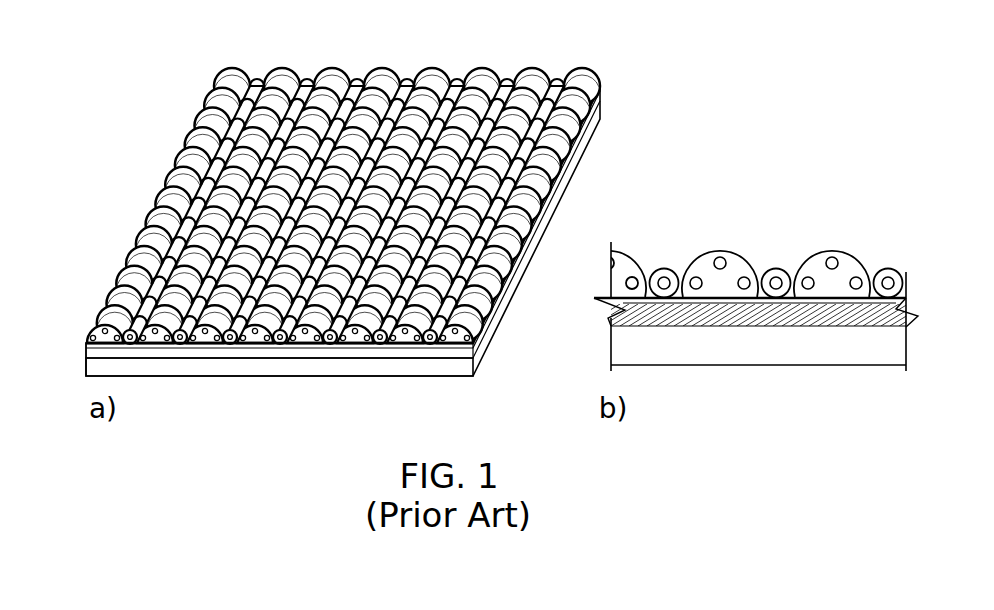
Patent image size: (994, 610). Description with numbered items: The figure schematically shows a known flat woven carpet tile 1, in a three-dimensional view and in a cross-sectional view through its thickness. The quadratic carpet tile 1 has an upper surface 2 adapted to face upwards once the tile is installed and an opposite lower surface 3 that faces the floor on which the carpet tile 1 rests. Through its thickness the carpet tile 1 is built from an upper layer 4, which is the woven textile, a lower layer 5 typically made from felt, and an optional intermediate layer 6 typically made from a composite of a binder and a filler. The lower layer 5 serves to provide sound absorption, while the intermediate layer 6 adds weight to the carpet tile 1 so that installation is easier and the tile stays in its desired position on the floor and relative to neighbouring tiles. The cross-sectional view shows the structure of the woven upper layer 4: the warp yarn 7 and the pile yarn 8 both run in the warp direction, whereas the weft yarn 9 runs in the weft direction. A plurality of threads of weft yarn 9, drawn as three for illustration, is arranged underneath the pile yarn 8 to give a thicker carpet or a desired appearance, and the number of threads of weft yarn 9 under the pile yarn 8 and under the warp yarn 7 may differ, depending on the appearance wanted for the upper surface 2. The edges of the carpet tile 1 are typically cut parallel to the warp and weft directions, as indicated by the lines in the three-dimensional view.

The carpet tile 1 is at (312, 240).
The upper surface 2 is at (367, 103).
The lower surface 3 is at (272, 377).
The upper layer 4 is at (87, 340).
The lower layer 5 is at (93, 368).
The intermediate layer 6 is at (87, 348).
The warp yarn 7 is at (776, 276).
The pile yarn 8 is at (712, 250).
The weft yarn 9 is at (783, 270).